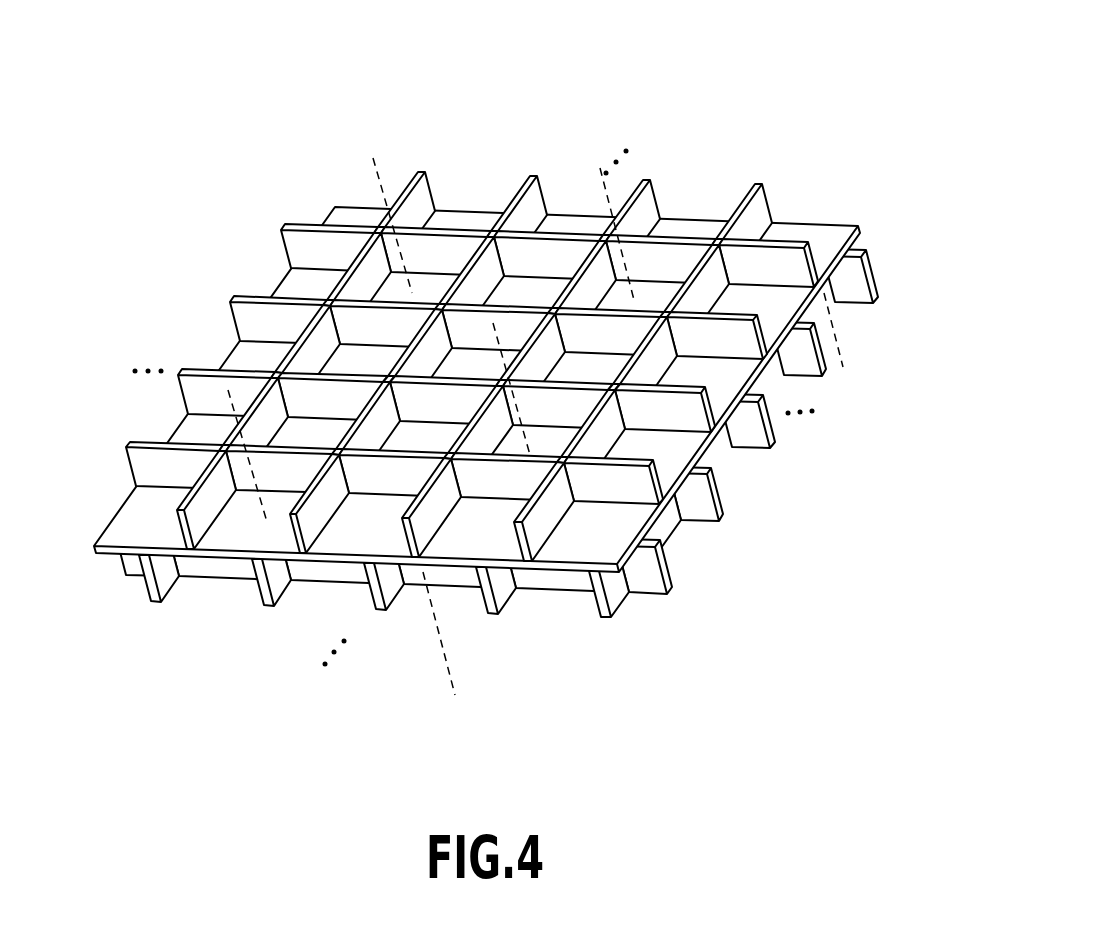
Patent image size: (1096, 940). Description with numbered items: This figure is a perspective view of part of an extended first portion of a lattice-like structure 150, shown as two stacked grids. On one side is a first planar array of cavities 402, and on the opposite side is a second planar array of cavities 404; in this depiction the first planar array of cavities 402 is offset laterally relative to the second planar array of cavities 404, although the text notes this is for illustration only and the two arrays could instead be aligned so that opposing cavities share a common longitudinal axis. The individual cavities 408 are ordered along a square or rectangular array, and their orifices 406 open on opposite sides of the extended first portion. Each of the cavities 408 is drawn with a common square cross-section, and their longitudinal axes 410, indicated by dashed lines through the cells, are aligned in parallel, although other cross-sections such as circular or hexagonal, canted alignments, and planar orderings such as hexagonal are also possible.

The lattice structure 150 is at (684, 62).
The first planar array of cavities 402 is at (450, 418).
The second planar array of cavities 404 is at (88, 561).
The orifices 406 is at (684, 246).
The cavities 408 is at (650, 272).
The longitudinal axes 410 is at (598, 172).